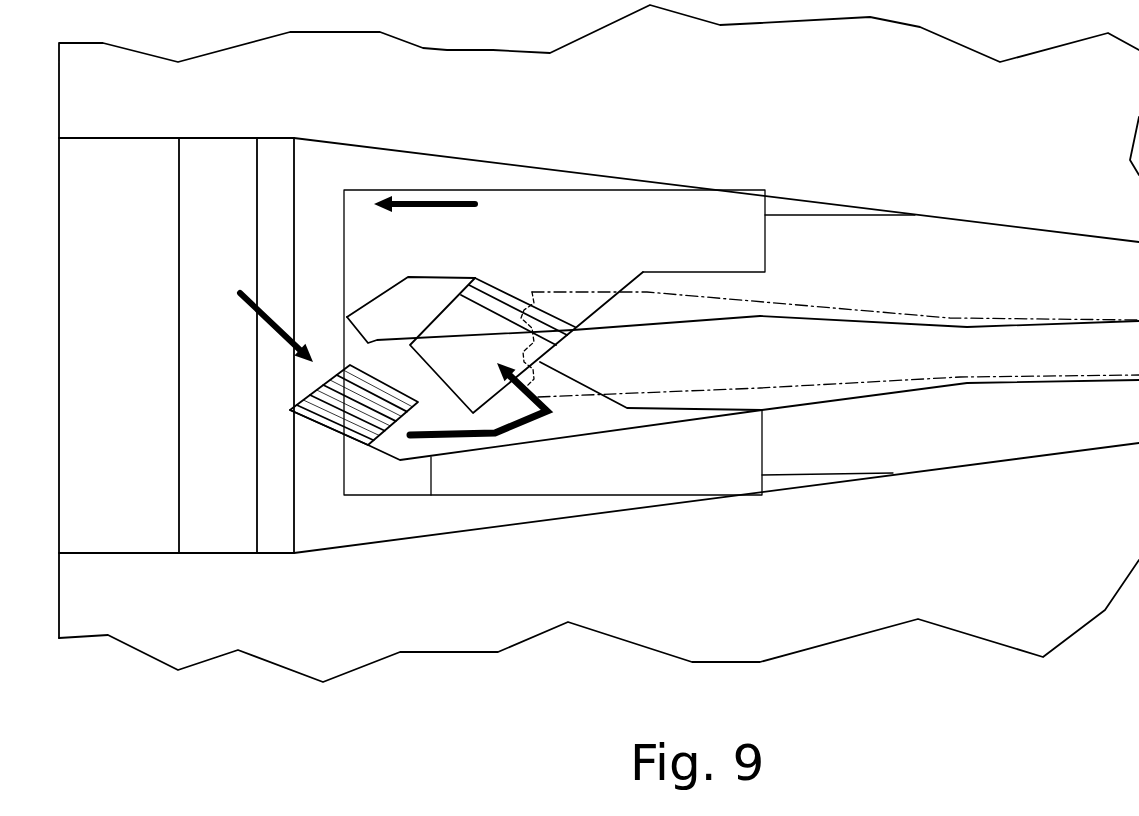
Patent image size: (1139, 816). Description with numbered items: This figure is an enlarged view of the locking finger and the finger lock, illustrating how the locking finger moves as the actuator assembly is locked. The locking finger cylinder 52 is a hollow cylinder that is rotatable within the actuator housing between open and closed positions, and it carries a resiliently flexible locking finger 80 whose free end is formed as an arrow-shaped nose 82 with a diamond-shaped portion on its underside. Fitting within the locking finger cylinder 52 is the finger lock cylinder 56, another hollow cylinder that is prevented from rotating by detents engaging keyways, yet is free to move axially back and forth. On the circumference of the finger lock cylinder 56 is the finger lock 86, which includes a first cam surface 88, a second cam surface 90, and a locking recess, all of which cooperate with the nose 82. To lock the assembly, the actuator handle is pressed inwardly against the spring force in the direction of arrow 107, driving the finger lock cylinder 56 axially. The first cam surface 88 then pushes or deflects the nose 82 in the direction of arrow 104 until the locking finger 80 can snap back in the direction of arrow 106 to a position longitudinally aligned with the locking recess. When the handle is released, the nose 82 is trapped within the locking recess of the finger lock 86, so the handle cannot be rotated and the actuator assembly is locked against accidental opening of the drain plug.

The locking finger cylinder 52 is at (902, 634).
The finger lock cylinder 56 is at (386, 535).
The locking finger 80 is at (816, 361).
The nose 82 is at (328, 400).
The finger lock 86 is at (598, 505).
The first cam surface 88 is at (362, 343).
The second cam surface 90 is at (510, 290).
The arrow 104 is at (272, 336).
The arrow 106 is at (529, 450).
The arrow 107 is at (435, 200).